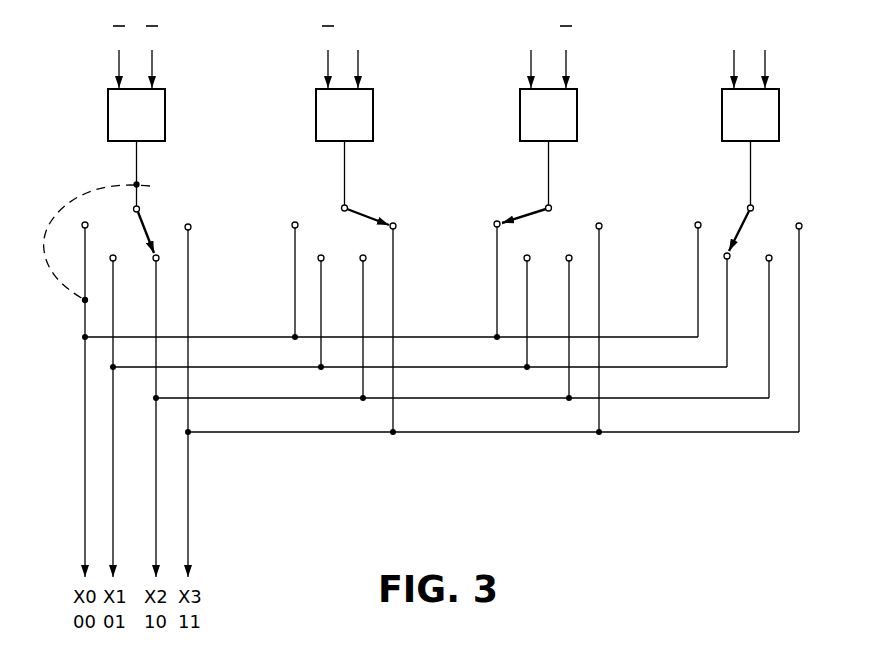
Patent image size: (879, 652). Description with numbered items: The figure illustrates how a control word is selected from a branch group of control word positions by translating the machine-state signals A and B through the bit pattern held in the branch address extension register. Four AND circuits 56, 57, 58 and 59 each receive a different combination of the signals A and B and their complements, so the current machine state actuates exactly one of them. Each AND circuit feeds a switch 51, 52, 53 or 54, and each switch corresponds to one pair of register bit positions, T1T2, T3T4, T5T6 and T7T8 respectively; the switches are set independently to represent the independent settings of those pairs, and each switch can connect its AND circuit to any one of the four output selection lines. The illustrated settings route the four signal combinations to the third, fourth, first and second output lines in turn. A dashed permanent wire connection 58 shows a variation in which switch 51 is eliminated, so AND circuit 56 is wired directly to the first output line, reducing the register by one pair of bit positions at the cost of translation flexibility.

The switch 51 is at (155, 222).
The switch 52 is at (363, 215).
The switch 53 is at (538, 212).
The switch 54 is at (743, 223).
The AND circuit 56 is at (166, 130).
The AND circuit 57 is at (373, 132).
The AND circuit 58 is at (577, 130).
The AND circuit 59 is at (779, 132).